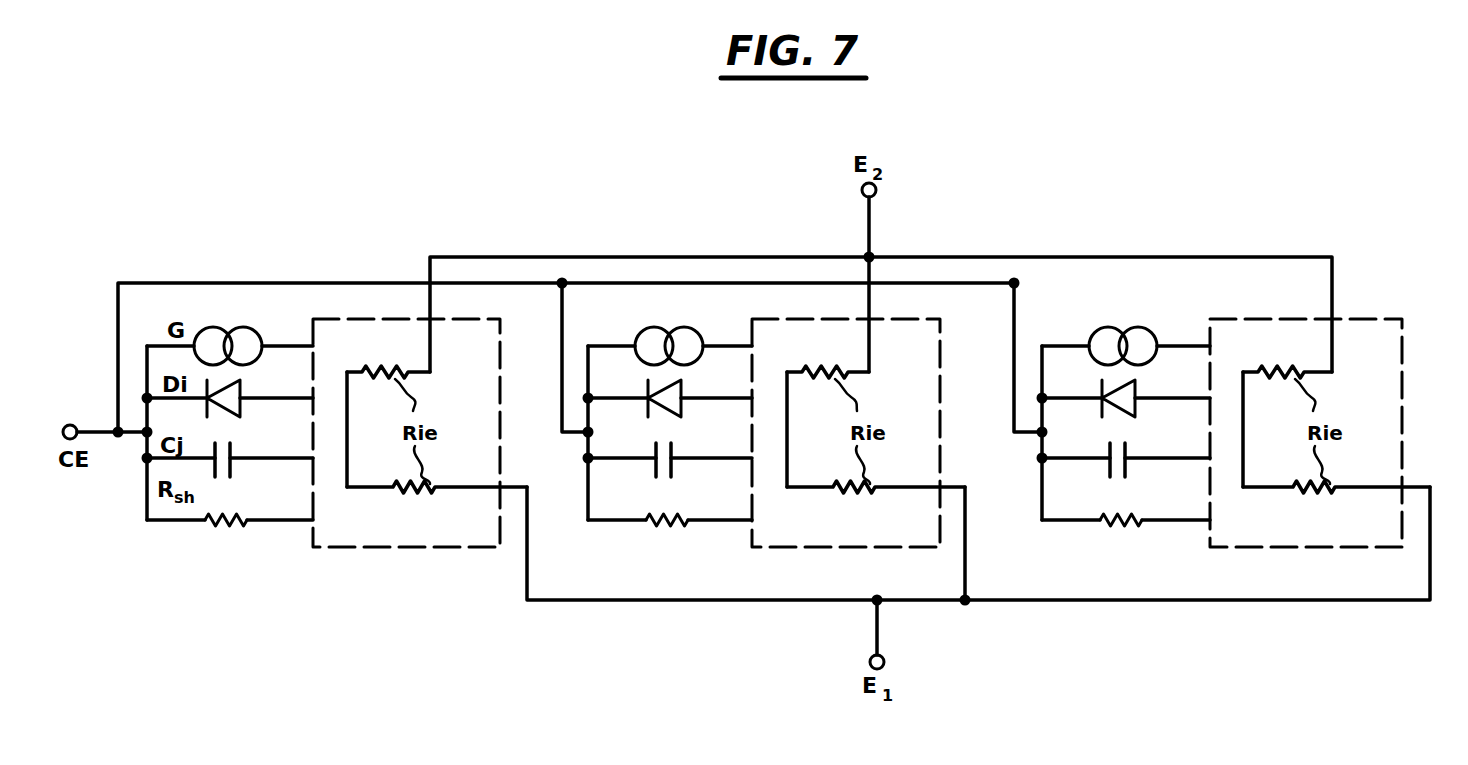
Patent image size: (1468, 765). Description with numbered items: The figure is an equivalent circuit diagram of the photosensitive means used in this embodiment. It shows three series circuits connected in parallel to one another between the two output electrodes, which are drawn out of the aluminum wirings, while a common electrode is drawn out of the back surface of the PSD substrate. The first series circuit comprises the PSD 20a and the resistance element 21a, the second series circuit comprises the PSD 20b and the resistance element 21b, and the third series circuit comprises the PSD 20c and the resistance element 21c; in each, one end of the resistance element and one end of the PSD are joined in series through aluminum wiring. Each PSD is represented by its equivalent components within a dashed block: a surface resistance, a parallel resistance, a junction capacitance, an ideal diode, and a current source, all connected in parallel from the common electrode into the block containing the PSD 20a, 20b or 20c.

The resistance element 21a is at (366, 366).
The PSD 20a is at (407, 495).
The resistance element 21b is at (808, 366).
The PSD 20b is at (845, 495).
The resistance element 21c is at (1265, 366).
The third PSD 20c is at (1308, 495).